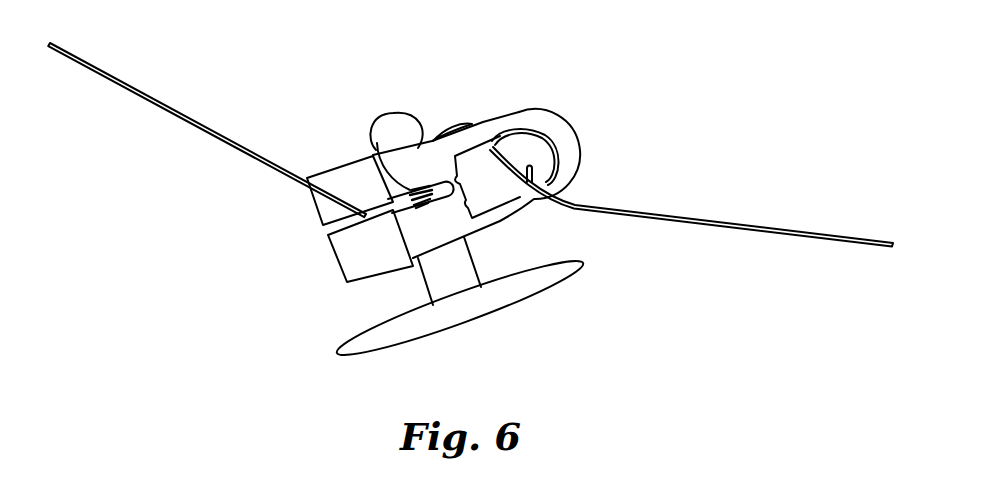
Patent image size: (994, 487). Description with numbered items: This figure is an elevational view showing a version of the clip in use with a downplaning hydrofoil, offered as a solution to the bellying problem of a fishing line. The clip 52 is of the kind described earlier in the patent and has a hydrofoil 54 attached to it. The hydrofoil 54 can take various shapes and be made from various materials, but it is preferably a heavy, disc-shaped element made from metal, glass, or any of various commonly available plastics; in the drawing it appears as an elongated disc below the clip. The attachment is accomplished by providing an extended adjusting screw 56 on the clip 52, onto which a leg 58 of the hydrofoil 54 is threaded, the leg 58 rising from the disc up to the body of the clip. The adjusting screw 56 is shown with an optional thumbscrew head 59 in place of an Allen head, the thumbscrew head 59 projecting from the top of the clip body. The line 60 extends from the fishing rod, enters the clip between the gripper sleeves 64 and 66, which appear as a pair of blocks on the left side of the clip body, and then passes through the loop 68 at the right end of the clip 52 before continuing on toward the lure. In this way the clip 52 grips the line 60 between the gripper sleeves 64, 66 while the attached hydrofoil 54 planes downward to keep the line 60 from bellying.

The clip 52 is at (487, 119).
The hydrofoil 54 is at (470, 308).
The adjusting screw 56 is at (391, 143).
The leg 58 is at (455, 266).
The thumbscrew head 59 is at (403, 122).
The line 60 is at (163, 101).
The gripper sleeve 64 is at (350, 260).
The gripper sleeve 66 is at (338, 176).
The loop 68 is at (532, 150).